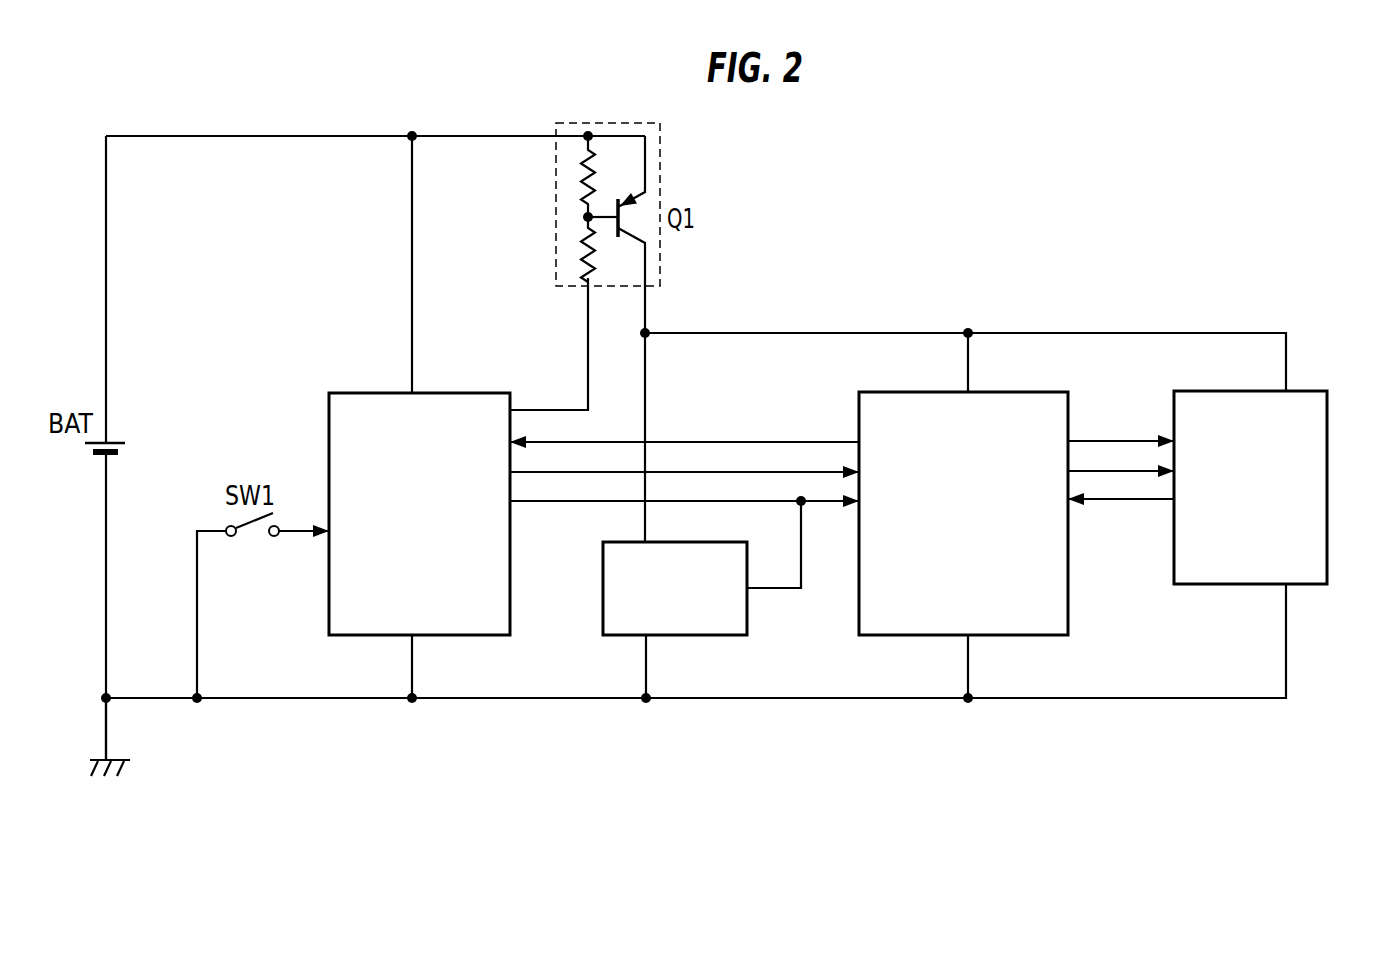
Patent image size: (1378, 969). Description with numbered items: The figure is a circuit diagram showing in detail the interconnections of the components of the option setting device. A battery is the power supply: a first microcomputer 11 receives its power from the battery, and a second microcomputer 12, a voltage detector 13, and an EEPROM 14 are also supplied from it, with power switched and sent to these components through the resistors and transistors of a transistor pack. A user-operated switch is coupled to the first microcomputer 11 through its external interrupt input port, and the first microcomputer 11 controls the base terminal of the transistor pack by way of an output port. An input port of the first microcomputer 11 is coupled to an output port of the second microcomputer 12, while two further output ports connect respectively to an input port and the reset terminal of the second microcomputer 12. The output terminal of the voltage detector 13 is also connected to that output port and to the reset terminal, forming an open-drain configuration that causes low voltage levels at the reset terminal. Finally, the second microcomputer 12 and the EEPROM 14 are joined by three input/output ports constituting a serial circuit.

The first microcomputer 11 is at (450, 393).
The second microcomputer 12 is at (1008, 392).
The voltage detector 13 is at (747, 542).
The EEPROM 14 is at (1307, 391).